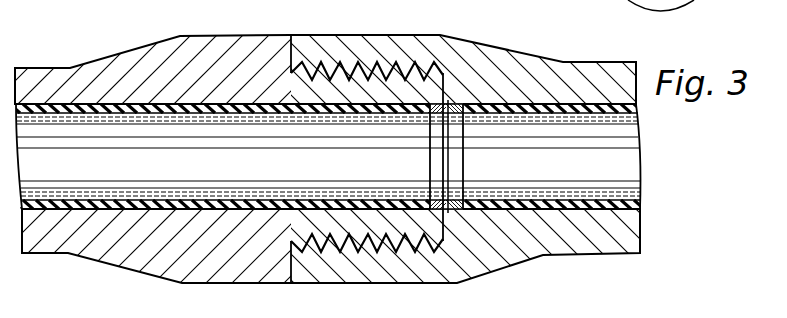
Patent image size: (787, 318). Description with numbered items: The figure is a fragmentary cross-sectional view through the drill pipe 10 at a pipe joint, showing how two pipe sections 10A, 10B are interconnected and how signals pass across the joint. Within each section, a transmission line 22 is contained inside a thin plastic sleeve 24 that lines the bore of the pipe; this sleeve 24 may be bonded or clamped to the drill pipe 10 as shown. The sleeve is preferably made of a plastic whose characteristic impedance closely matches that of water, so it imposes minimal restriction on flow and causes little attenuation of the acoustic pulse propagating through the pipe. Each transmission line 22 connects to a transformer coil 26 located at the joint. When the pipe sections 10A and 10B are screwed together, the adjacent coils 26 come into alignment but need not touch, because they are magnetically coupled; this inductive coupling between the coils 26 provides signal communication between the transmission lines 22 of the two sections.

The drill pipe 10 is at (353, 30).
The pipe section 10A is at (157, 57).
The pipe section 10B is at (530, 58).
The transmission line 22 is at (246, 106).
The plastic sleeve 24 is at (343, 113).
The transformer coil 26 is at (432, 118).